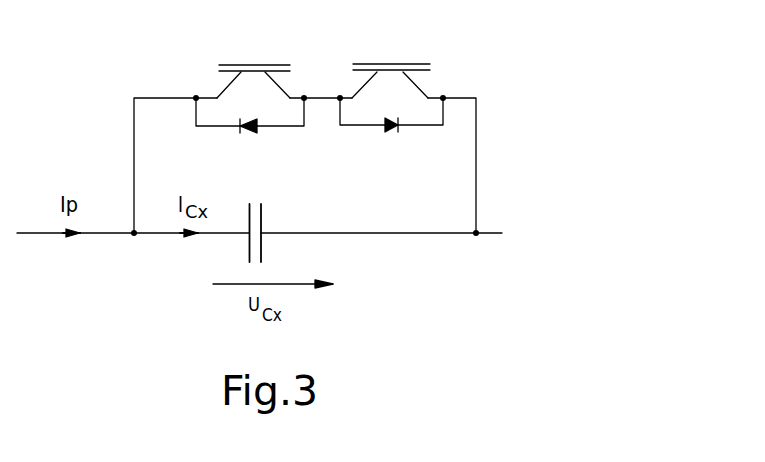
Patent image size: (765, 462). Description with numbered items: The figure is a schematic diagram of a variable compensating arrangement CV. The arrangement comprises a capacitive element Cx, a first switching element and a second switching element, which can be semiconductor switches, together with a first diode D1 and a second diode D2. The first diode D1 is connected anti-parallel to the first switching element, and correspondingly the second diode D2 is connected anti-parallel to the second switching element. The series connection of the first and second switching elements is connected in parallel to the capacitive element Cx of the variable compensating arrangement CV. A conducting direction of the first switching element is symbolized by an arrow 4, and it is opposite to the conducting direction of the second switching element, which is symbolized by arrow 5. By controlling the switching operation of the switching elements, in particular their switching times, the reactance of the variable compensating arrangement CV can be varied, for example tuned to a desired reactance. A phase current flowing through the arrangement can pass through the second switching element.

The arrow 4 is at (275, 87).
The arrow 5 is at (372, 76).
The first diode D1 is at (250, 129).
The second diode D2 is at (391, 129).
The capacitive element Cx is at (273, 227).
The variable compensating arrangement CV is at (100, 258).